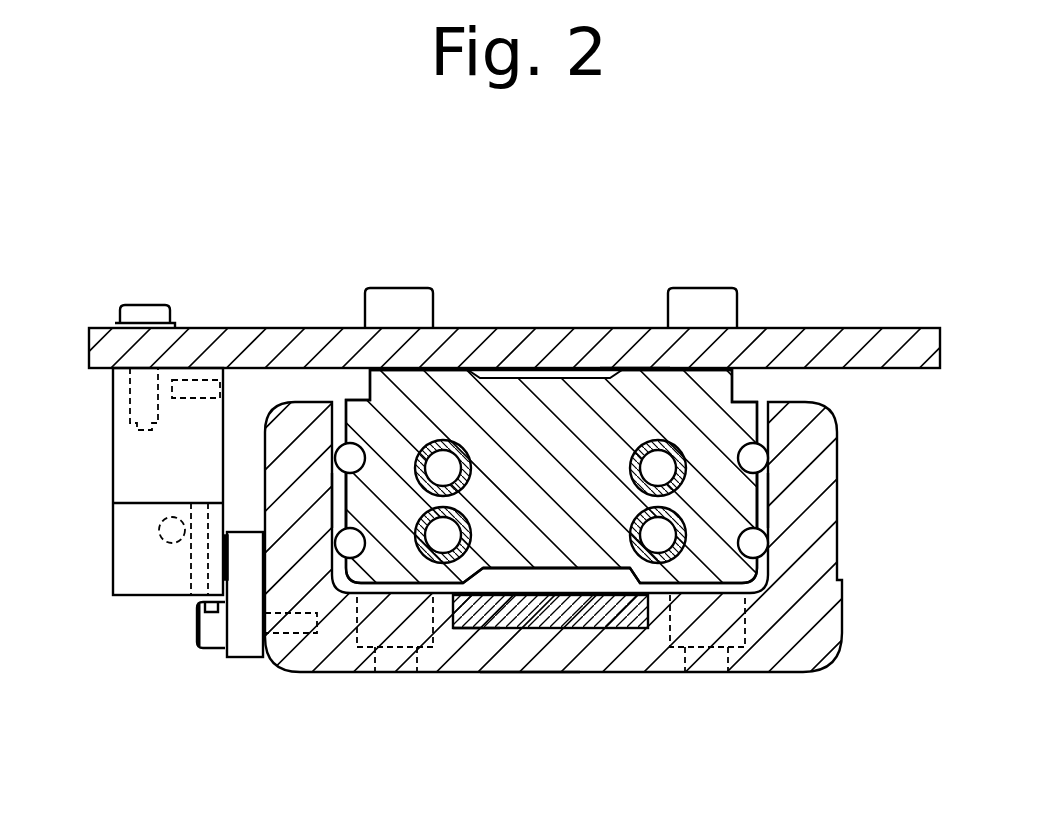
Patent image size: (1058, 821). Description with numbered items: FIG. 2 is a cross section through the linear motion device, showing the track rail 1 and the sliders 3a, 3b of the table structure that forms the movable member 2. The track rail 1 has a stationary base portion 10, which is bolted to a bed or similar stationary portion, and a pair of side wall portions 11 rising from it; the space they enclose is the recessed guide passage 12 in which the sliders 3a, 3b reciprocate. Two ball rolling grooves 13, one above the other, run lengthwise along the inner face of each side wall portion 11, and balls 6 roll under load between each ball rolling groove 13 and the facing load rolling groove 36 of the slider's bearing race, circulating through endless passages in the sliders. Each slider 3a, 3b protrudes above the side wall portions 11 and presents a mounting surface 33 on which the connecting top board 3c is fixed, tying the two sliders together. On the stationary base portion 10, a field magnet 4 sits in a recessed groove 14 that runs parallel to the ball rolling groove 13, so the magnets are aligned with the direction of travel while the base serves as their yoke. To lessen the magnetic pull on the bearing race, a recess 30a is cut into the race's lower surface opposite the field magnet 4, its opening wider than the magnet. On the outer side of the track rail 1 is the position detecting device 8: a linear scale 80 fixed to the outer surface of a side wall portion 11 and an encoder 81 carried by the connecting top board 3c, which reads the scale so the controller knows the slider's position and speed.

The track rail 1 is at (529, 497).
The movable member 2 is at (742, 292).
The slider 3a is at (497, 396).
The slider 3b is at (551, 476).
The connecting top board 3c is at (862, 328).
The field magnet 4 is at (593, 568).
The ball 6 is at (372, 432).
The position detecting device 8 is at (122, 605).
The stationary base portion 10 is at (525, 658).
The side wall portion 11 is at (835, 620).
The guide passage 12 is at (692, 592).
The ball rolling groove 13 is at (345, 442).
The recessed groove 14 is at (489, 628).
The recess 30a is at (617, 560).
The mounting surface 33 is at (637, 368).
The load rolling groove 36 is at (760, 445).
The linear scale 80 is at (228, 558).
The encoder 81 is at (113, 522).